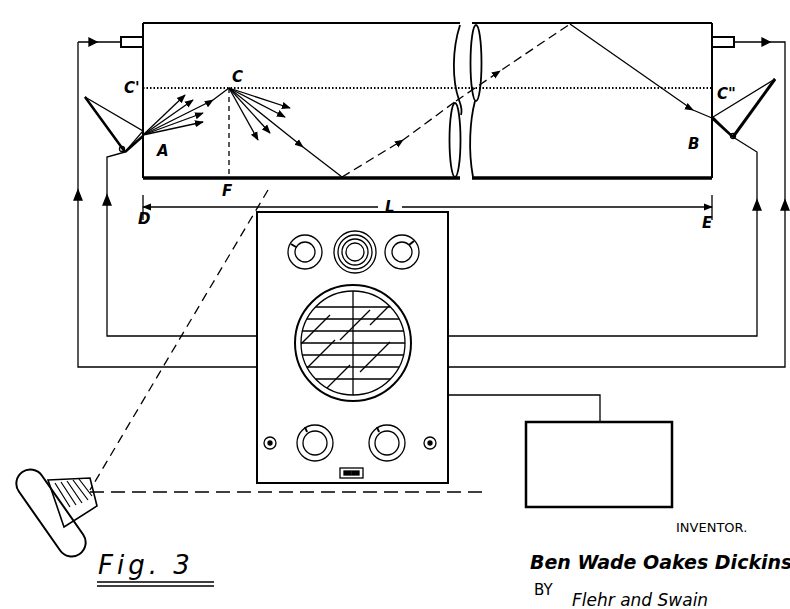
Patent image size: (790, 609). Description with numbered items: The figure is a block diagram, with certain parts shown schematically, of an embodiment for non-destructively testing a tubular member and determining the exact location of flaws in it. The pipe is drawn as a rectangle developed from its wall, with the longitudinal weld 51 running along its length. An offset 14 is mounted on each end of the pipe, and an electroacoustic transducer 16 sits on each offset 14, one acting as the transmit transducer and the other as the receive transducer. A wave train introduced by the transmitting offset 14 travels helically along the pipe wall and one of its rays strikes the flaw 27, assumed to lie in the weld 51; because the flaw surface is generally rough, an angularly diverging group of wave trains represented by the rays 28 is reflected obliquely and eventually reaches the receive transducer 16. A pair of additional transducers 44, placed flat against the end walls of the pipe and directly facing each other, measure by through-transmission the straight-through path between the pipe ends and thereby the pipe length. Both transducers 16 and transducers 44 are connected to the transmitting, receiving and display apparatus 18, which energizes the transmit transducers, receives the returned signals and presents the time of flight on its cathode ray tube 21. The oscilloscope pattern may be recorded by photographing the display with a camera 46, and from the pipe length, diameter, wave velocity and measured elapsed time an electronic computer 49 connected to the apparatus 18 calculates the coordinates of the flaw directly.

The offset 14 is at (103, 112).
The electroacoustic transducer 16 is at (121, 158).
The transmitting, receiving and display apparatus 18 is at (452, 303).
The cathode ray tube 21 is at (311, 383).
The flaw 27 is at (228, 86).
The reflected rays 28 is at (377, 160).
The additional transducers 44 is at (140, 4).
The camera 46 is at (86, 510).
The electronic computer 49 is at (672, 460).
The longitudinal weld 51 is at (394, 88).